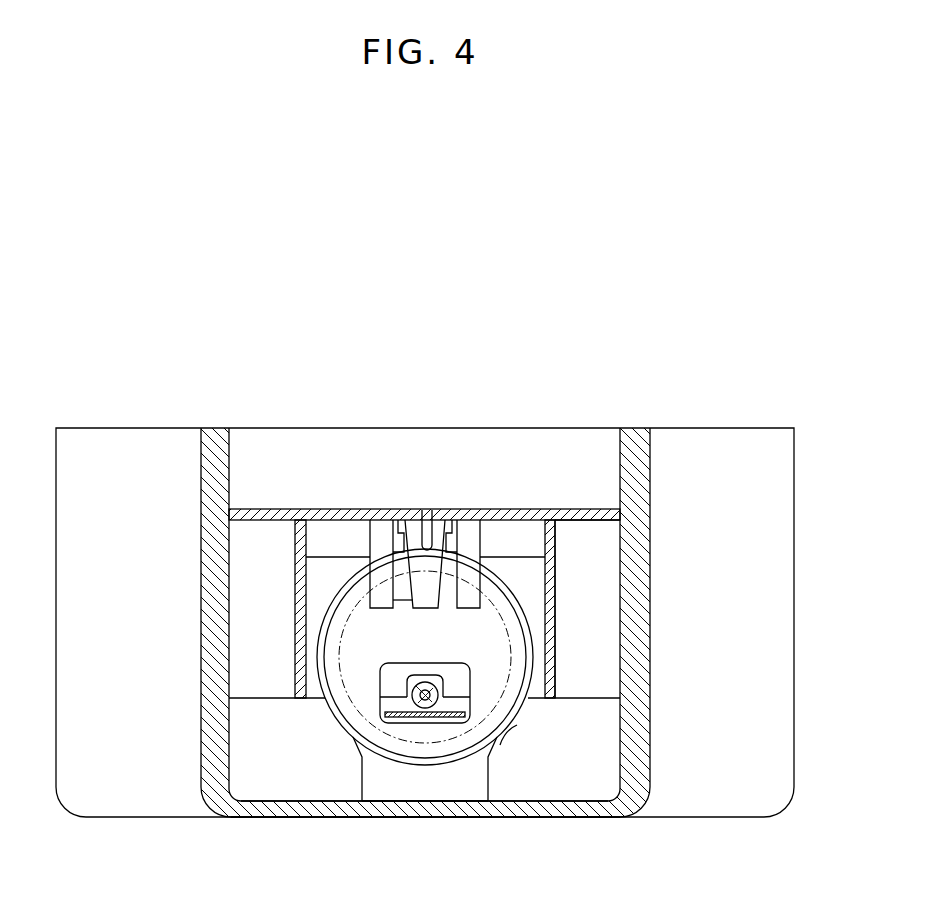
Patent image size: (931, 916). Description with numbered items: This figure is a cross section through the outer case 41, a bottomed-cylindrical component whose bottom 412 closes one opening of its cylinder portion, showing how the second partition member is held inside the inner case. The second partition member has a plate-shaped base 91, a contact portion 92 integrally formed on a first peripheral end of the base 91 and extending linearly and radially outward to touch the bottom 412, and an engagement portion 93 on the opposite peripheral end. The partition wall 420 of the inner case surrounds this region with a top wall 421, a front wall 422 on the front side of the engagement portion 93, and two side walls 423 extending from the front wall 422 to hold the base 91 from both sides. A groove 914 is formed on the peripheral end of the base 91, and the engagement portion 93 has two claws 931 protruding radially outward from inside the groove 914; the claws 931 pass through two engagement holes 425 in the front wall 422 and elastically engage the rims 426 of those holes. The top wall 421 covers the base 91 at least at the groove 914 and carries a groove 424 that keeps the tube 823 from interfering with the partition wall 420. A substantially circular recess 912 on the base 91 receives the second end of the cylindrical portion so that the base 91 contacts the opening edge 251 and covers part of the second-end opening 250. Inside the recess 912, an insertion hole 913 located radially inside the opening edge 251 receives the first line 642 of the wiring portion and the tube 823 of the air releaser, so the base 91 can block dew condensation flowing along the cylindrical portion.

The outer case 41 is at (717, 448).
The bottom 412 is at (287, 808).
The contact portion 92 is at (462, 795).
The front wall 422 is at (572, 508).
The side walls 423 is at (298, 608).
The partition wall 420 is at (600, 548).
The top wall 421 is at (595, 678).
The groove 914 is at (382, 541).
The rims 426 is at (385, 508).
The claws 931 is at (400, 508).
The engagement holes 425 is at (440, 508).
The base 91 is at (530, 608).
The engagement portion 93 is at (396, 611).
The second-end opening 250 is at (353, 707).
The recess 912 is at (490, 753).
The opening edge 251 is at (493, 721).
The groove 424 is at (435, 683).
The insertion hole 913 is at (408, 700).
The tube 823 is at (423, 684).
The first line 642 is at (437, 718).